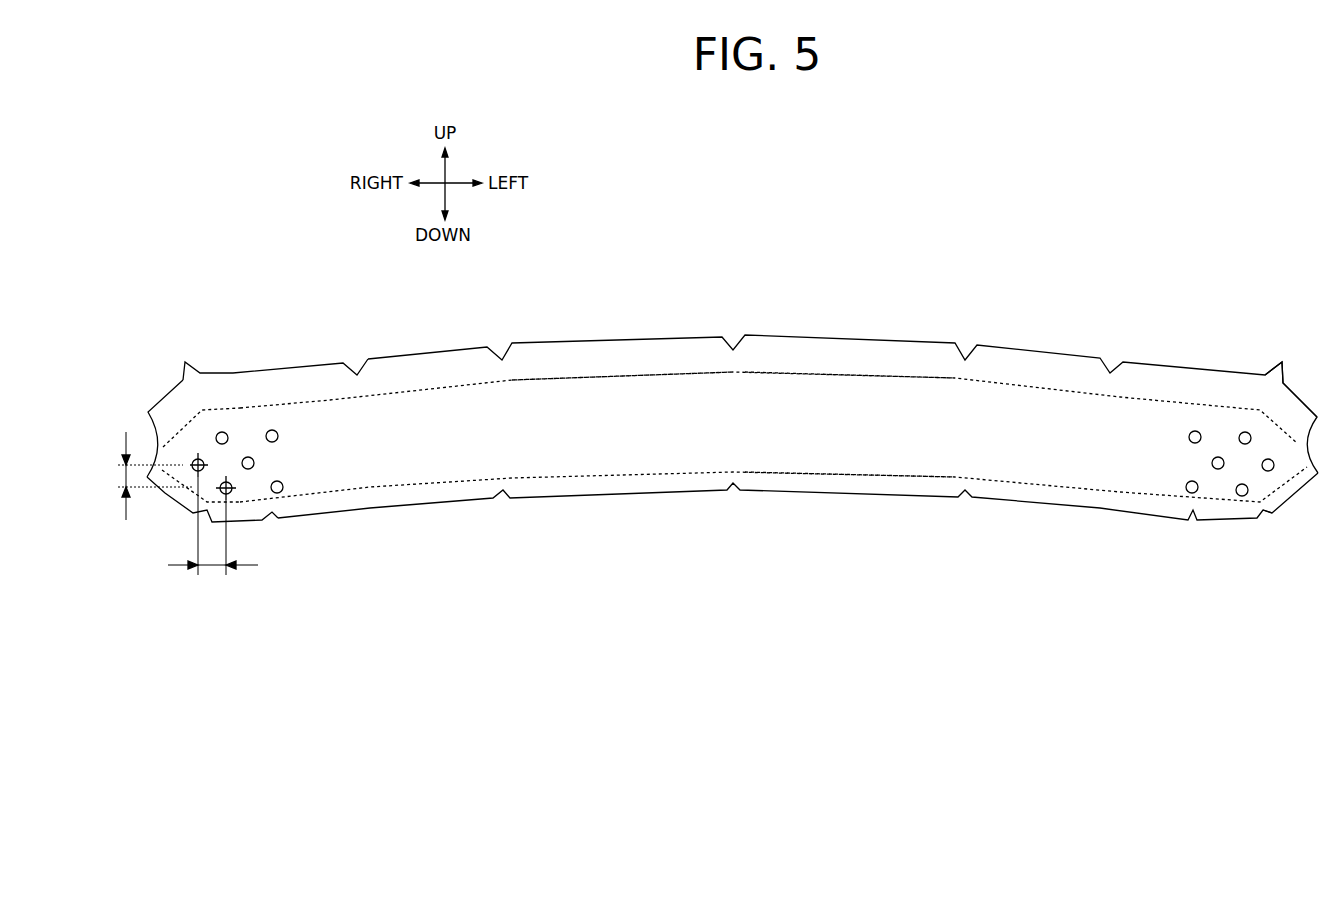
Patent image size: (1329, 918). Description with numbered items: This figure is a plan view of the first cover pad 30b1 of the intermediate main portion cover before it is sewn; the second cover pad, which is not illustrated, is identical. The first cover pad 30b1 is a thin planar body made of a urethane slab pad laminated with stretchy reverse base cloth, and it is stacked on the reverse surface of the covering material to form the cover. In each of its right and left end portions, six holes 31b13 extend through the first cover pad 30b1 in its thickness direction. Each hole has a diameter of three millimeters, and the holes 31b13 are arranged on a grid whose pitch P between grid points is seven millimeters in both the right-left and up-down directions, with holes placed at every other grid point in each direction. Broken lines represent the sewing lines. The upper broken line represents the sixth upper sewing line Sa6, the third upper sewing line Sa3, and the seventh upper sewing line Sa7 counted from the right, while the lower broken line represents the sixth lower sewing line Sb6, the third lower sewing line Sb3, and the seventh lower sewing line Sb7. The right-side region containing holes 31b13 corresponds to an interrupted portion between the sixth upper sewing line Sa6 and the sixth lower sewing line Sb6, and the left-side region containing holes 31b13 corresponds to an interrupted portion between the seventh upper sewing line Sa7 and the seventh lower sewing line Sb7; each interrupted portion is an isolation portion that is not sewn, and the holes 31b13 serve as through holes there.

The sixth upper sewing line Sa6 is at (185, 433).
The sixth lower sewing line Sb6 is at (165, 490).
The holes 31b13 is at (272, 430).
The pitch P is at (179, 503).
The first cover pad 30b1 is at (647, 408).
The third upper sewing line Sa3 is at (857, 373).
The third lower sewing line Sb3 is at (855, 477).
The seventh upper sewing line Sa7 is at (1278, 428).
The seventh lower sewing line Sb7 is at (1285, 482).